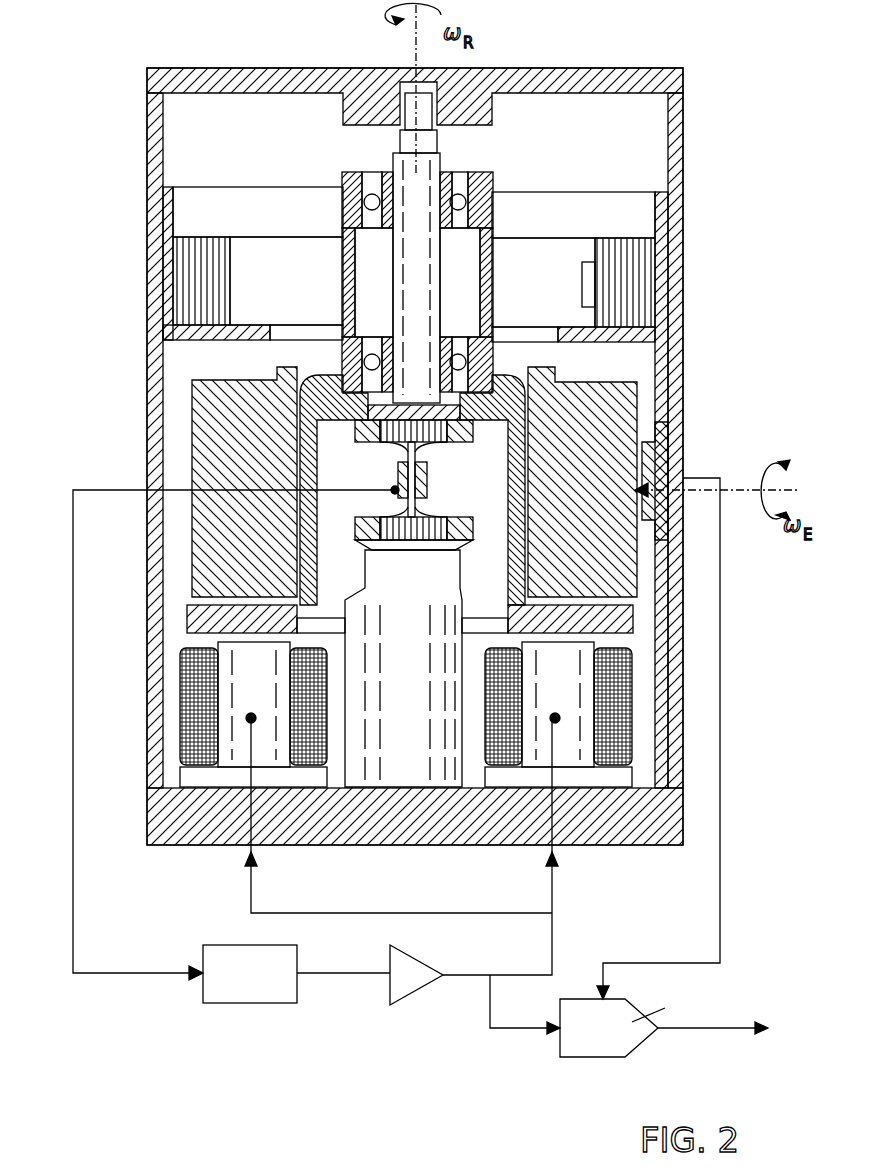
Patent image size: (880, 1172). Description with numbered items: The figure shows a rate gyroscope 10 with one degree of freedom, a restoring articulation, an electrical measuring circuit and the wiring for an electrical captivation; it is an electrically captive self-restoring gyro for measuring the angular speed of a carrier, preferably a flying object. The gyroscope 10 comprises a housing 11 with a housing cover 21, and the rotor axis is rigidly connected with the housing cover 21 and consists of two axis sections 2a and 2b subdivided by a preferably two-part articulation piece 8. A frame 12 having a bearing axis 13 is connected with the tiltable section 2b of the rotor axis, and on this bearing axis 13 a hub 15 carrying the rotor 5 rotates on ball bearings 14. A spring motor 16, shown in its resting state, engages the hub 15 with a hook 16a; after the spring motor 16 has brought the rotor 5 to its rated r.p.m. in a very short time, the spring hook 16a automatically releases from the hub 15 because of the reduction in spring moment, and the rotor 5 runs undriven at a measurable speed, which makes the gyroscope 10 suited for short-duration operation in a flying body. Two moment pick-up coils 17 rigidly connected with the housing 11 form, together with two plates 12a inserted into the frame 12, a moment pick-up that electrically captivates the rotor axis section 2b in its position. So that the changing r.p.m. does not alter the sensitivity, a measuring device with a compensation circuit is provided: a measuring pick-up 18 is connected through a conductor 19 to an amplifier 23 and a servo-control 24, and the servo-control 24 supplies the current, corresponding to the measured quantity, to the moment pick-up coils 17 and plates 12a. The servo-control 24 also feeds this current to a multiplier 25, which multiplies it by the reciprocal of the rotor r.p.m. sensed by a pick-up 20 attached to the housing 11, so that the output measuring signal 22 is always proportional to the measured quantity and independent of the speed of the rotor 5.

The axis section 2a is at (393, 745).
The tiltable axis section 2b is at (470, 406).
The rotor 5 is at (215, 432).
The articulation piece 8 is at (418, 462).
The rate gyroscope 10 is at (700, 312).
The housing 11 is at (683, 140).
The frame 12 is at (535, 402).
The plates 12a is at (190, 622).
The bearing axis 13 is at (445, 271).
The ball bearings 14 is at (490, 200).
The hub 15 is at (340, 280).
The spring motor 16 is at (190, 282).
The hook 16a is at (588, 278).
The moment pick-up coils 17 is at (222, 722).
The measuring pick-up 18 is at (398, 486).
The conductor 19 is at (113, 978).
The r.p.m. pick-up 20 is at (668, 462).
The housing cover 21 is at (558, 76).
The measuring signal 22 is at (765, 1035).
The amplifier 23 is at (253, 1003).
The servo-control 24 is at (412, 988).
The multiplier 25 is at (595, 1045).